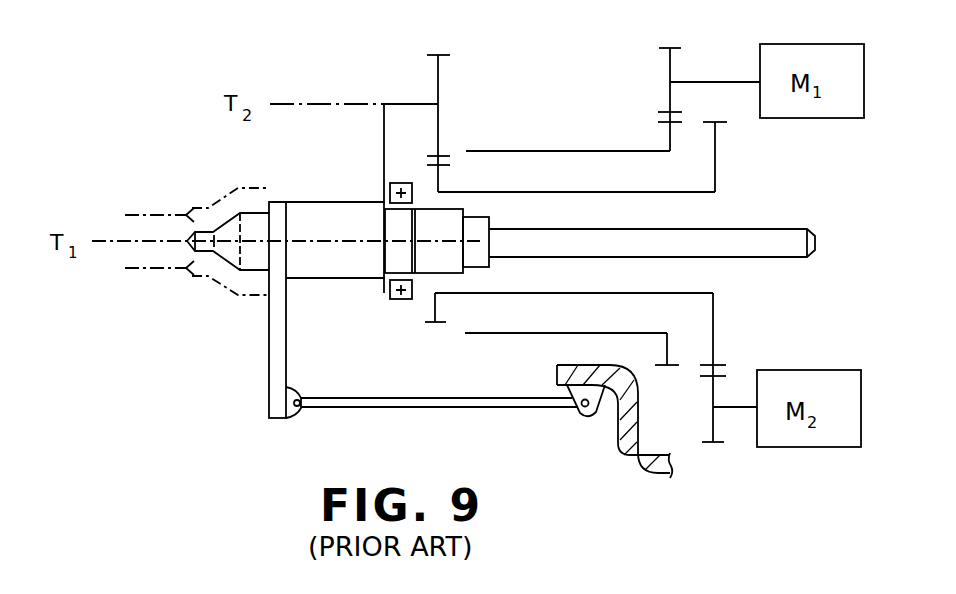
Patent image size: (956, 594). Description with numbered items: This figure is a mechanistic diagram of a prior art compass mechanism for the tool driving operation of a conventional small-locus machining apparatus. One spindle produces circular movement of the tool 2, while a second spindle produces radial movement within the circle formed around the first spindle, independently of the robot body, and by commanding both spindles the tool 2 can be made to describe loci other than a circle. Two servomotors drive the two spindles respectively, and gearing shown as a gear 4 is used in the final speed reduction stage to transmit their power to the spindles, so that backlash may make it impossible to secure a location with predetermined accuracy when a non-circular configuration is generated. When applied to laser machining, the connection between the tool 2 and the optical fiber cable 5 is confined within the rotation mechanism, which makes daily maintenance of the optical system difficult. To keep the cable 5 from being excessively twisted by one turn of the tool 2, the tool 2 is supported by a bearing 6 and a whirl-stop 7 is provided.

The tool 2 is at (252, 260).
The gear 4 is at (450, 148).
The optical fiber cable 5 is at (765, 228).
The bearing 6 is at (397, 302).
The whirl-stop 7 is at (268, 388).